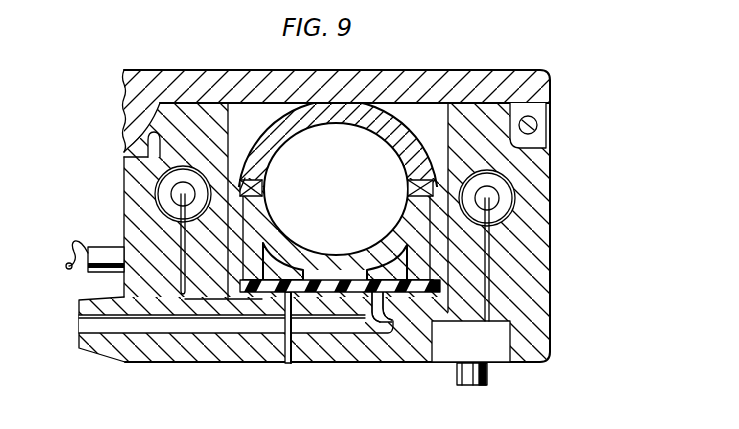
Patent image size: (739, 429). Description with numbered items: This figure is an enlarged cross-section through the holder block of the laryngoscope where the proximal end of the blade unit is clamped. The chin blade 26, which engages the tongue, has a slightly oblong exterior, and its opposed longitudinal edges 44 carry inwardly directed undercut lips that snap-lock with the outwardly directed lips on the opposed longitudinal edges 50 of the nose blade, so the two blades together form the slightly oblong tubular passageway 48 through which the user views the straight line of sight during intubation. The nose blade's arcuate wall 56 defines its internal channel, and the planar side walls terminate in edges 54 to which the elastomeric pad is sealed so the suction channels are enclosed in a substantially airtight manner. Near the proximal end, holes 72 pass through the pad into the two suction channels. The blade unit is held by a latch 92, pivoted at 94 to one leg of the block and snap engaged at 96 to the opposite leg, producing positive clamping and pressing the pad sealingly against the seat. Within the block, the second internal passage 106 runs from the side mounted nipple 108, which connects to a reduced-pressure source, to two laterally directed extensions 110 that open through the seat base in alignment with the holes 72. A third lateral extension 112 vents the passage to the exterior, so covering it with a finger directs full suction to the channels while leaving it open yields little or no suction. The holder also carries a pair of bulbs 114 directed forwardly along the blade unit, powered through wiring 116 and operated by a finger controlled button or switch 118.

The chin blade 26 is at (258, 128).
The opposed longitudinal edges of the chin blade 44 is at (410, 172).
The tubular passageway 48 is at (358, 145).
The opposed longitudinal edges of the nose blade 50 is at (412, 193).
The edges of the side walls 54 is at (350, 236).
The arcuate wall 56 is at (278, 226).
The holes 72 is at (335, 252).
The latch 92 is at (476, 76).
The pivot 94 is at (540, 125).
The snap engagement 96 is at (143, 146).
The second internal passage 106 is at (184, 332).
The side mounted nipple 108 is at (100, 345).
The laterally directed extensions 110 is at (321, 236).
The third lateral extension 112 is at (297, 360).
The bulbs 114 is at (500, 199).
The wiring 116 is at (106, 247).
The button or switch 118 is at (470, 386).